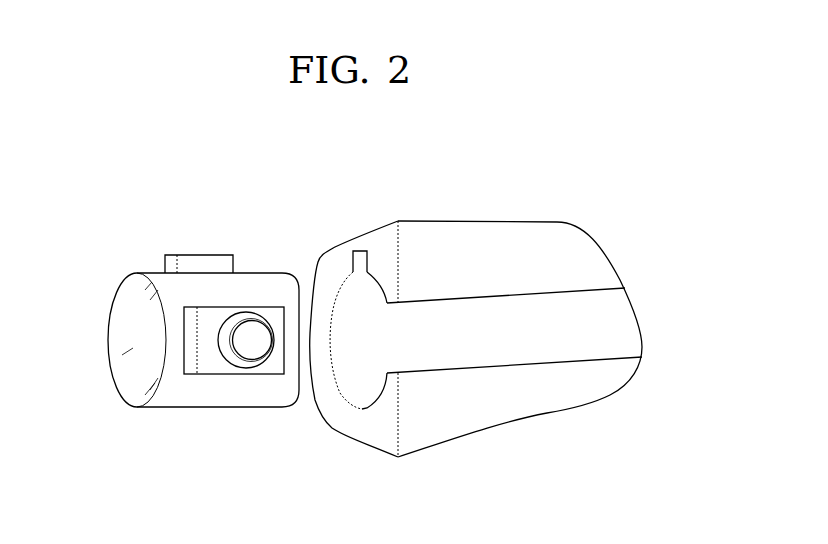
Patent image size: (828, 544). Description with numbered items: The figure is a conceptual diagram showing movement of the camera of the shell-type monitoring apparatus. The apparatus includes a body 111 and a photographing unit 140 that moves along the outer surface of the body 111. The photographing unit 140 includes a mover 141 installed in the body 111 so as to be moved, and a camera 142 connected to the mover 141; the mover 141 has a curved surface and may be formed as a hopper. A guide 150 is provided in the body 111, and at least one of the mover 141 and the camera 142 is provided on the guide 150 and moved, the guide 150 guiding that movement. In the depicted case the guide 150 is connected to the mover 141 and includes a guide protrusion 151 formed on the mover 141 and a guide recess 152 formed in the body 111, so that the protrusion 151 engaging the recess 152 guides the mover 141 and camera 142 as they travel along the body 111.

The body 111 is at (522, 235).
The photographing unit 140 is at (203, 398).
The mover 141 is at (188, 398).
The camera 142 is at (252, 370).
The guide 150 is at (266, 202).
The guide protrusion 151 is at (210, 255).
The guide recess 152 is at (342, 223).